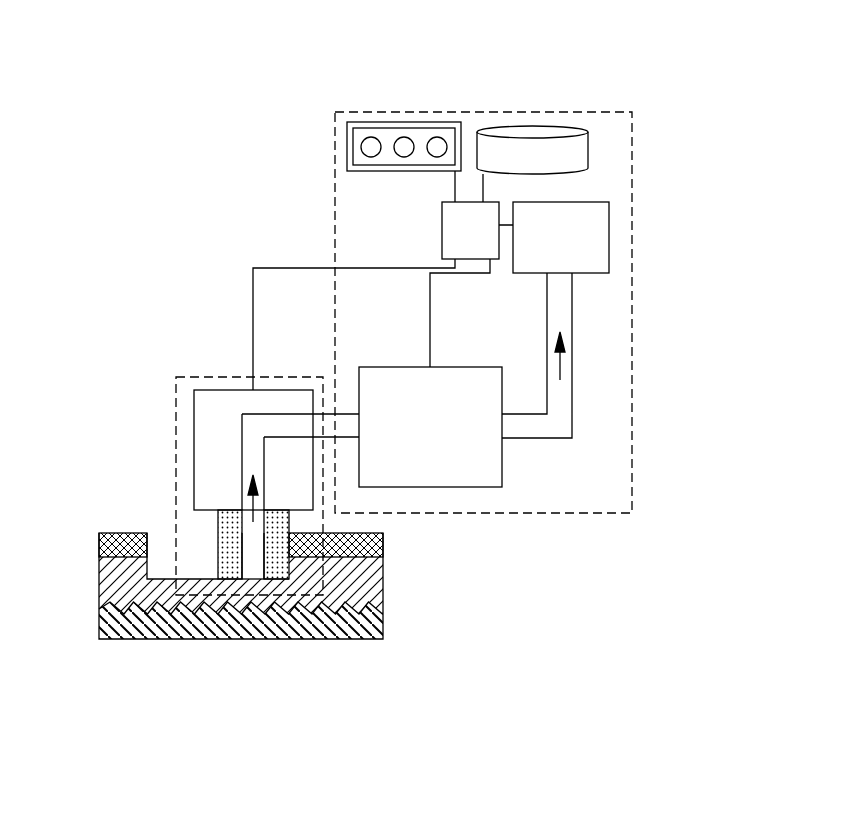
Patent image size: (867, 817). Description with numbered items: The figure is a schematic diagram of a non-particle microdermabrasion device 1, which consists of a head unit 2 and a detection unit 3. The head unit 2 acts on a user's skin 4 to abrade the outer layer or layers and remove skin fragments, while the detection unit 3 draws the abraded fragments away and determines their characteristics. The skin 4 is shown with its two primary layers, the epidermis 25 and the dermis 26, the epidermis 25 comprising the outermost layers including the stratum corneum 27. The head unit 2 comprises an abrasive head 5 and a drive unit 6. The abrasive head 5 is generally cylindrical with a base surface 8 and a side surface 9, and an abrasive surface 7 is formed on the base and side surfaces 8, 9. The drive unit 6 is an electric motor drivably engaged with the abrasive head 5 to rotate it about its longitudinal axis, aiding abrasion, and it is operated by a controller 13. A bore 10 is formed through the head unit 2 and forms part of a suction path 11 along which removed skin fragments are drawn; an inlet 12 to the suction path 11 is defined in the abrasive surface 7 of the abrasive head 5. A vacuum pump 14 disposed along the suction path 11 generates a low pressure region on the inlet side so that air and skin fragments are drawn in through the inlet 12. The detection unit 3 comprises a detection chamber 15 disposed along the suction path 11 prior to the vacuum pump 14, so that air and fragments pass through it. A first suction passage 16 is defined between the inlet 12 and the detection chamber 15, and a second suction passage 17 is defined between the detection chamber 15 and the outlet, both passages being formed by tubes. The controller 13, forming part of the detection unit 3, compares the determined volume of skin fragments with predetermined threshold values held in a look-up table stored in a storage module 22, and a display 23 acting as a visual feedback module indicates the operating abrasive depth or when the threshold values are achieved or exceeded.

The microdermabrasion device 1 is at (700, 84).
The head unit 2 is at (175, 437).
The detection unit 3 is at (632, 285).
The skin 4 is at (208, 648).
The abrasive head 5 is at (225, 583).
The drive unit 6 is at (228, 388).
The abrasive surface 7 is at (280, 583).
The base surface 8 is at (230, 583).
The side surface 9 is at (217, 525).
The bore 10 is at (255, 562).
The suction path 11 is at (300, 427).
The inlet 12 is at (252, 583).
The controller 13 is at (456, 239).
The vacuum pump 14 is at (546, 249).
The detection chamber 15 is at (417, 439).
The first suction passage 16 is at (252, 448).
The second suction passage 17 is at (567, 327).
The storage module 22 is at (588, 145).
The display 23 is at (347, 143).
The epidermis 25 is at (100, 583).
The dermis 26 is at (100, 625).
The stratum corneum 27 is at (100, 548).